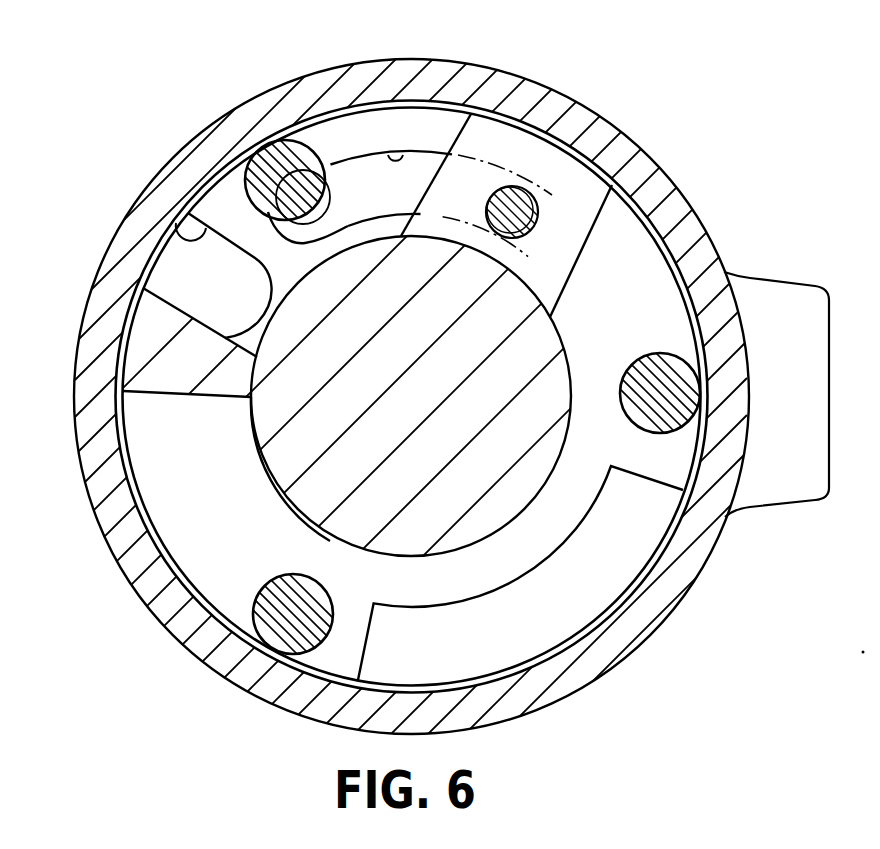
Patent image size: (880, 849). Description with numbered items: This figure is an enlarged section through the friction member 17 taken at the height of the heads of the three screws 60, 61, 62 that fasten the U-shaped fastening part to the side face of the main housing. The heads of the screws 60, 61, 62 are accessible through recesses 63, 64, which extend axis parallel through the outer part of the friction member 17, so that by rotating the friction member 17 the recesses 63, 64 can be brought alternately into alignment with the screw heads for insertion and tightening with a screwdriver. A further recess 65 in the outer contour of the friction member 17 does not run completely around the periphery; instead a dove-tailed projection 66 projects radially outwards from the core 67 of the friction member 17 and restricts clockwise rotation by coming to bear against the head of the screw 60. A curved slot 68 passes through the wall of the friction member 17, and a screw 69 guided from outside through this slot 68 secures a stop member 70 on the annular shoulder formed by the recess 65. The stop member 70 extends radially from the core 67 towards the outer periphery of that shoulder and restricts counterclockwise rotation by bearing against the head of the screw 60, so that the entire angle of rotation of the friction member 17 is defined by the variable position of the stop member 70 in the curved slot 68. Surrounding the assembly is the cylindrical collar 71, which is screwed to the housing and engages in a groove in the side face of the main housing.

The friction member 17 is at (470, 466).
The screw 60 is at (278, 158).
The screw 61 is at (260, 654).
The screw 62 is at (652, 410).
The recess 63 is at (176, 223).
The recess 64 is at (450, 606).
The recess 65 is at (294, 507).
The dove-tailed projection 66 is at (145, 379).
The core 67 is at (545, 352).
The curved slot 68 is at (402, 152).
The screw 69 is at (522, 195).
The stop member 70 is at (596, 202).
The cylindrical collar 71 is at (96, 310).